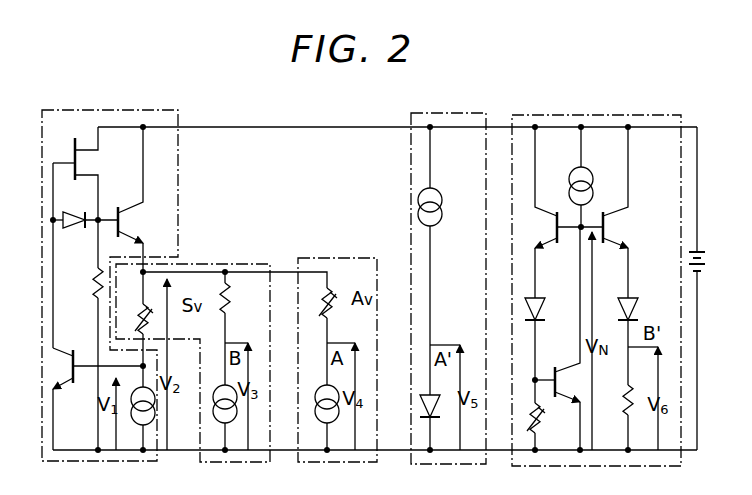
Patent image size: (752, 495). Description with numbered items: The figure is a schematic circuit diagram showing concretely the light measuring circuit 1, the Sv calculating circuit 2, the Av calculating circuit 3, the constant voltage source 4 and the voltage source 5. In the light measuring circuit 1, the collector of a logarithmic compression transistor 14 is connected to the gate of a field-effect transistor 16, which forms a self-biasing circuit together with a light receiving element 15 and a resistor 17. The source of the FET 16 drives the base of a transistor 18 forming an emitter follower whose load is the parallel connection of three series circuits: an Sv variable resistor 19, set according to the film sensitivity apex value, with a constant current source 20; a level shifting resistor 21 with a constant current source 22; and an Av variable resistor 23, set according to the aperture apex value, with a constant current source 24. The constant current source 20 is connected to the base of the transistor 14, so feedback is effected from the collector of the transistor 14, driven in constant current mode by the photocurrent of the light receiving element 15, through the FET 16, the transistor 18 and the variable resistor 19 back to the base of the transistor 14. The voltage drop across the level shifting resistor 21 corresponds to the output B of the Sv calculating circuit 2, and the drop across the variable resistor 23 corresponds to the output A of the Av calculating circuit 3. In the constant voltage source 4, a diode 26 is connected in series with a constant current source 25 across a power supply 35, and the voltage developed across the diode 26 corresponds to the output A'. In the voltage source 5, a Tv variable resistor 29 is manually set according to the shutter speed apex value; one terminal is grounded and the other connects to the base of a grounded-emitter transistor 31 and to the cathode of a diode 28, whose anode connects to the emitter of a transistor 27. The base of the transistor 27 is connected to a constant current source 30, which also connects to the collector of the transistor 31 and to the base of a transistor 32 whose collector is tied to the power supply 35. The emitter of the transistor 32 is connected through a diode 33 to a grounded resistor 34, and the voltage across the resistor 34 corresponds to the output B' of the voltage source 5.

The light measuring circuit 1 is at (79, 109).
The Sv calculating circuit 2 is at (231, 263).
The Av calculating circuit 3 is at (338, 257).
The constant voltage source 4 is at (427, 112).
The voltage source 5 is at (535, 114).
The logarithmic compression transistor 14 is at (91, 399).
The light receiving element 15 is at (85, 235).
The field-effect transistor 16 is at (83, 173).
The resistor 17 is at (84, 335).
The transistor 18 is at (137, 199).
The Sv variable resistor 19 is at (134, 319).
The constant current source 20 is at (148, 427).
The level shifting resistor 21 is at (236, 328).
The constant current source 22 is at (212, 396).
The Av variable resistor 23 is at (339, 336).
The constant current source 24 is at (319, 408).
The constant current source 25 is at (439, 261).
The diode 26 is at (437, 411).
The transistor 27 is at (559, 212).
The diode 28 is at (542, 326).
The Tv variable resistor 29 is at (546, 415).
The constant current source 30 is at (590, 177).
The transistor 31 is at (562, 338).
The transistor 32 is at (622, 212).
The diode 33 is at (636, 329).
The resistor 34 is at (638, 409).
The power supply 35 is at (706, 258).